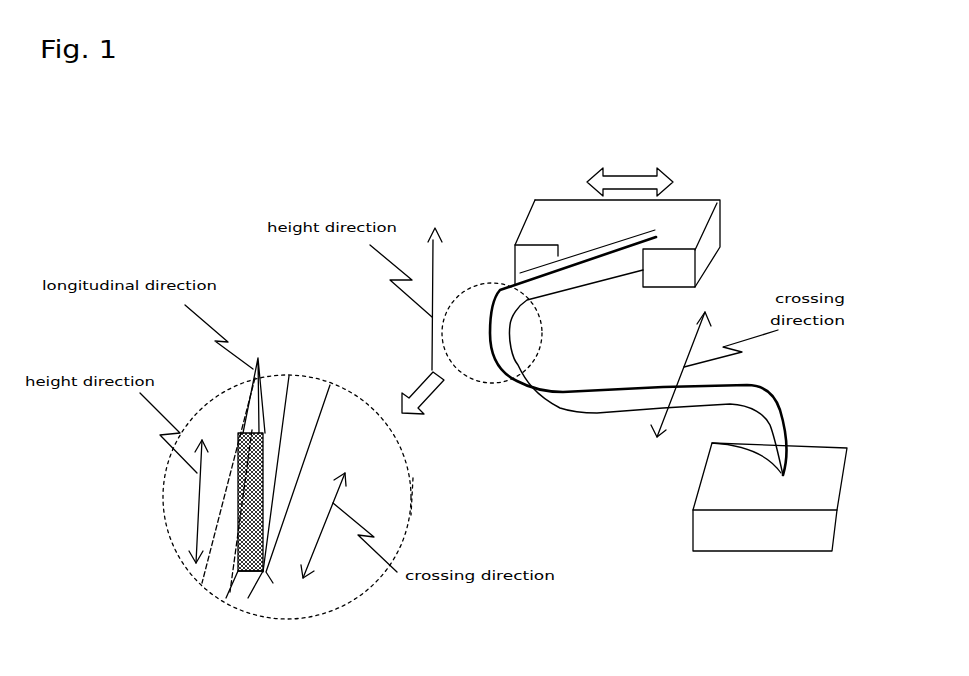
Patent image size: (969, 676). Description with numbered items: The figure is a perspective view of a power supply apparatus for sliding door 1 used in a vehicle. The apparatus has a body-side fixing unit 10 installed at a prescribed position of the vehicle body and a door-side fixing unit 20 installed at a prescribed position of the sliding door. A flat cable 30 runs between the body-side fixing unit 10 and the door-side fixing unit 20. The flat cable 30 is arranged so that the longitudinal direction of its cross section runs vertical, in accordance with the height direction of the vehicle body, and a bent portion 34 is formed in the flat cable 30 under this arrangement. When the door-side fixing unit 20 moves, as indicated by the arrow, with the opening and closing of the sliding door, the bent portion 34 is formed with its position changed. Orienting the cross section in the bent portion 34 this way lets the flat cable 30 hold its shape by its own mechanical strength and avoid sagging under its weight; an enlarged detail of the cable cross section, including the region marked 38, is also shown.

The power supply apparatus for sliding door 1 is at (703, 160).
The door-side fixing unit 20 is at (714, 201).
The flat cable 30 is at (299, 393).
The bent portion 34 is at (483, 380).
The cutting edge 38 is at (262, 575).
The body-side fixing unit 10 is at (753, 538).